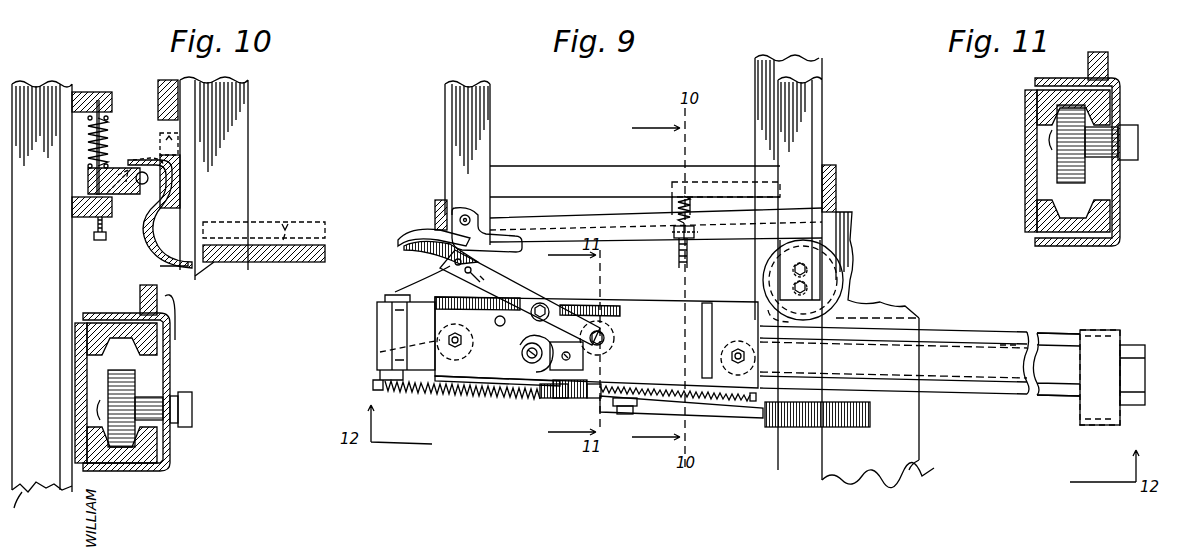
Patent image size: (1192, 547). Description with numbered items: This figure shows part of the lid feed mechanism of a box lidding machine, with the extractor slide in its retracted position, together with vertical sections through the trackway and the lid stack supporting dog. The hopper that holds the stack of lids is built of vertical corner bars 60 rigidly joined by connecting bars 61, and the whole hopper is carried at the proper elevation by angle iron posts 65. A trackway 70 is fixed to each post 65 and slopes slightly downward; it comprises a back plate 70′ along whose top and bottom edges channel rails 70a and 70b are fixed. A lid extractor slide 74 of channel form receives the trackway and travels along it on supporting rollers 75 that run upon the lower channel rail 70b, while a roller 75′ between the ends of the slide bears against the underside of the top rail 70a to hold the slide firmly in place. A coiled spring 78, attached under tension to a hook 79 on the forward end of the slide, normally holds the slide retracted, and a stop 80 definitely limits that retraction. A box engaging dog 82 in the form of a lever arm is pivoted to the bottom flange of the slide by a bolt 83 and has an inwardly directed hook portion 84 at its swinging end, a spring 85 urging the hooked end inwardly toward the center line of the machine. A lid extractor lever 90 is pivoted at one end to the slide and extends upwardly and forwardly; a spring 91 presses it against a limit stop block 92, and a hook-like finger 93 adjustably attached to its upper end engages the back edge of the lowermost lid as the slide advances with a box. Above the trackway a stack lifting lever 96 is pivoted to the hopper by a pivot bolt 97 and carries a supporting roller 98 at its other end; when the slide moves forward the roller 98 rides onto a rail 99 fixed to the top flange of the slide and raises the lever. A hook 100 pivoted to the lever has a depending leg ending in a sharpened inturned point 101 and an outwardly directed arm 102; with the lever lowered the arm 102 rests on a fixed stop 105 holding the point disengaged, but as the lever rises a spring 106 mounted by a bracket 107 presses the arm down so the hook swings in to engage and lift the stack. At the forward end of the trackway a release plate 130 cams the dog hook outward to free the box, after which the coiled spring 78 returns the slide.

In FIG. 9, the vertical corner bar 60 is at (445, 108).
In FIG. 9, the connecting bar 61 is at (580, 174).
In FIG. 10, the angle iron post 65 is at (44, 480).
In FIG. 9, the angle iron post 65 is at (926, 454).
In FIG. 9, the trackway 70 is at (1039, 333).
In FIG. 10, the back plate 70′ is at (75, 378).
In FIG. 9, the back plate 70′ is at (912, 362).
In FIG. 11, the back plate 70′ is at (1024, 182).
In FIG. 10, the top channel rail 70a is at (140, 330).
In FIG. 9, the top channel rail 70a is at (1000, 332).
In FIG. 11, the top channel rail 70a is at (1046, 100).
In FIG. 10, the lower channel rail 70b is at (150, 455).
In FIG. 9, the lower channel rail 70b is at (968, 396).
In FIG. 11, the lower channel rail 70b is at (1044, 218).
In FIG. 10, the lid extractor slide 74 is at (170, 380).
In FIG. 9, the lid extractor slide 74 is at (520, 378).
In FIG. 11, the lid extractor slide 74 is at (1118, 102).
In FIG. 10, the supporting roller 75 is at (122, 452).
In FIG. 9, the supporting roller 75 is at (386, 354).
In FIG. 9, the roller 75′ is at (616, 338).
In FIG. 11, the roller 75′ is at (1070, 140).
In FIG. 9, the coiled spring 78 is at (442, 398).
In FIG. 9, the hook 79 is at (738, 402).
In FIG. 9, the stop 80 is at (392, 332).
In FIG. 9, the box engaging dog 82 is at (762, 420).
In FIG. 9, the bolt 83 is at (624, 414).
In FIG. 9, the hook portion 84 is at (806, 428).
In FIG. 9, the spring 85 is at (566, 400).
In FIG. 9, the lid extractor lever 90 is at (448, 265).
In FIG. 9, the spring 91 is at (520, 352).
In FIG. 9, the limit stop block 92 is at (590, 358).
In FIG. 9, the hook-like finger 93 is at (410, 240).
In FIG. 10, the stack lifting lever 96 is at (180, 172).
In FIG. 9, the stack lifting lever 96 is at (644, 232).
In FIG. 9, the pivot bolt 97 is at (462, 212).
In FIG. 9, the supporting roller 98 is at (838, 300).
In FIG. 10, the rail 99 is at (144, 281).
In FIG. 9, the rail 99 is at (700, 300).
In FIG. 11, the rail 99 is at (1100, 66).
In FIG. 10, the hook 100 is at (160, 236).
In FIG. 9, the hook 100 is at (674, 266).
In FIG. 10, the inturned point 101 is at (208, 282).
In FIG. 10, the outwardly directed arm 102 is at (88, 162).
In FIG. 10, the fixed stop 105 is at (78, 215).
In FIG. 10, the spring 106 is at (108, 140).
In FIG. 9, the spring 106 is at (676, 208).
In FIG. 10, the bracket 107 is at (100, 92).
In FIG. 9, the bracket 107 is at (706, 182).
In FIG. 9, the release plate 130 is at (1094, 428).